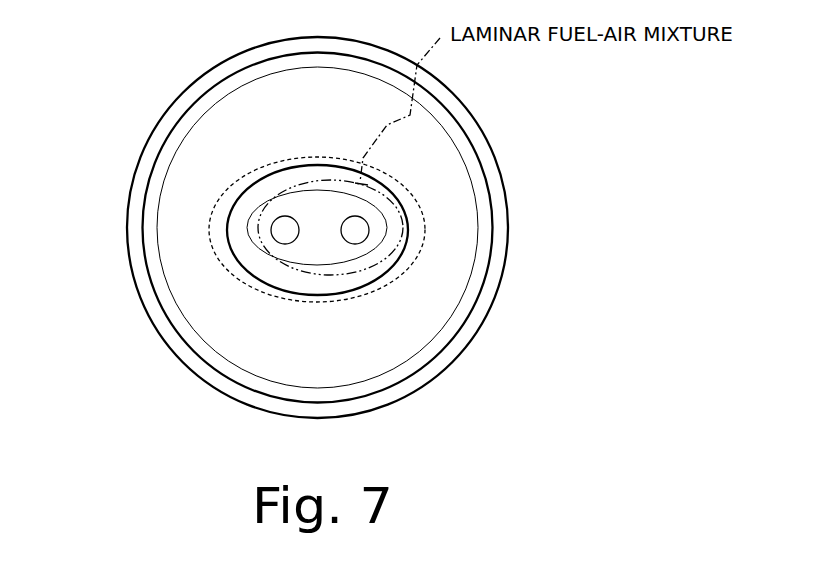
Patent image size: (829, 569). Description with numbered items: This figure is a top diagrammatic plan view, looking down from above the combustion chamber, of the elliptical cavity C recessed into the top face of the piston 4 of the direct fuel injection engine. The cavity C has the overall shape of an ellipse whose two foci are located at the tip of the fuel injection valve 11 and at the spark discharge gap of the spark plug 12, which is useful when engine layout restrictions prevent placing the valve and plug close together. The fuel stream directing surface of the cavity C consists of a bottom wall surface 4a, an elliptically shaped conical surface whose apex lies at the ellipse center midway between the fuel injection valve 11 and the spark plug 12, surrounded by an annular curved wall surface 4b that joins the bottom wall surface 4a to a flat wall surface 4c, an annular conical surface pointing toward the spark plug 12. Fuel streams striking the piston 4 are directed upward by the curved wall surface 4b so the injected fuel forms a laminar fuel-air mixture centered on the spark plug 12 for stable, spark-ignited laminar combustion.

The piston 4 is at (133, 172).
The bottom wall surface 4a is at (302, 252).
The curved wall surface 4b is at (287, 283).
The flat wall surface 4c is at (312, 301).
The fuel injection valve 11 is at (285, 230).
The spark plug 12 is at (355, 230).
The cavity C is at (294, 162).